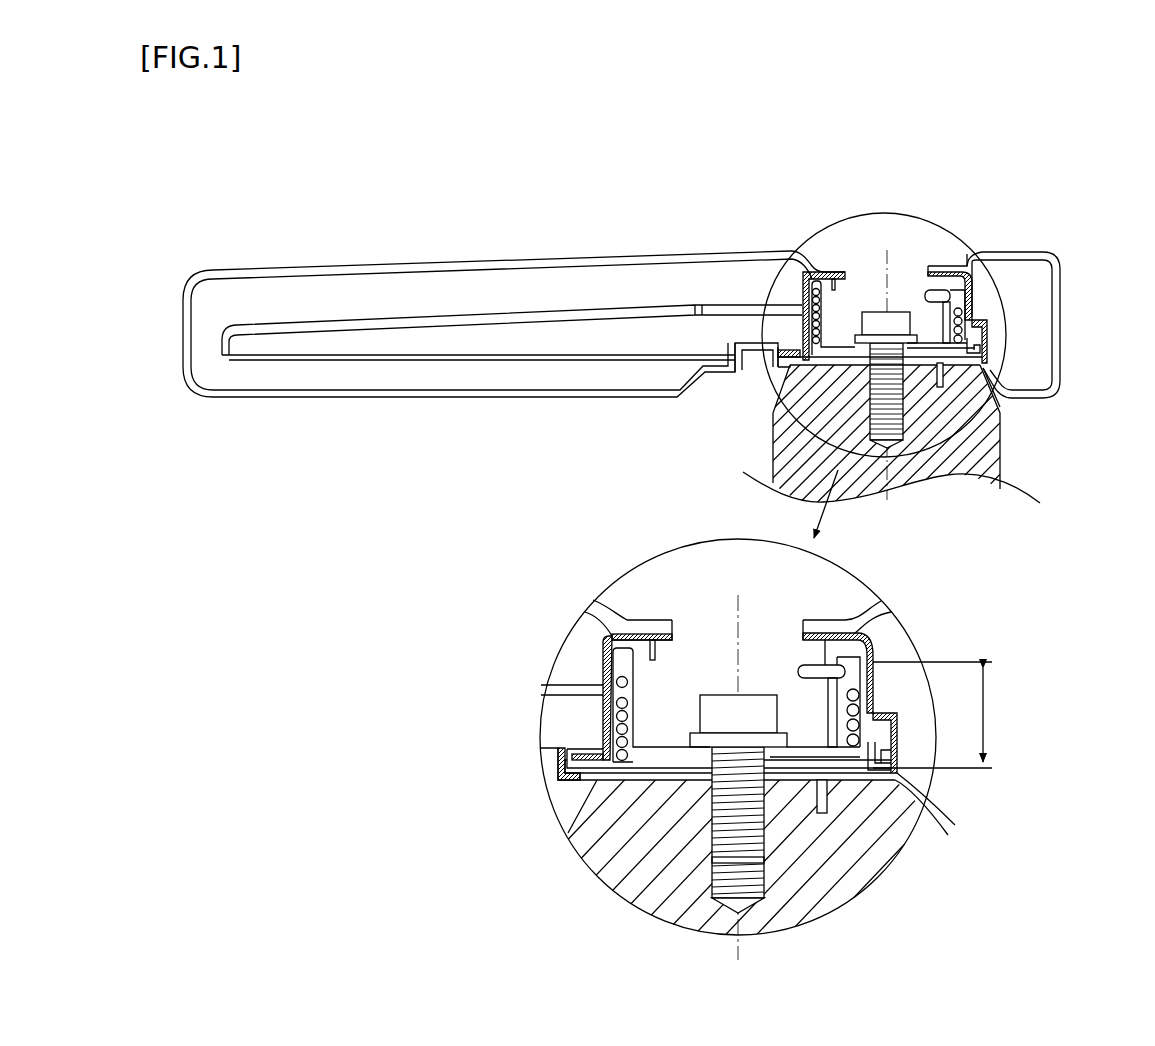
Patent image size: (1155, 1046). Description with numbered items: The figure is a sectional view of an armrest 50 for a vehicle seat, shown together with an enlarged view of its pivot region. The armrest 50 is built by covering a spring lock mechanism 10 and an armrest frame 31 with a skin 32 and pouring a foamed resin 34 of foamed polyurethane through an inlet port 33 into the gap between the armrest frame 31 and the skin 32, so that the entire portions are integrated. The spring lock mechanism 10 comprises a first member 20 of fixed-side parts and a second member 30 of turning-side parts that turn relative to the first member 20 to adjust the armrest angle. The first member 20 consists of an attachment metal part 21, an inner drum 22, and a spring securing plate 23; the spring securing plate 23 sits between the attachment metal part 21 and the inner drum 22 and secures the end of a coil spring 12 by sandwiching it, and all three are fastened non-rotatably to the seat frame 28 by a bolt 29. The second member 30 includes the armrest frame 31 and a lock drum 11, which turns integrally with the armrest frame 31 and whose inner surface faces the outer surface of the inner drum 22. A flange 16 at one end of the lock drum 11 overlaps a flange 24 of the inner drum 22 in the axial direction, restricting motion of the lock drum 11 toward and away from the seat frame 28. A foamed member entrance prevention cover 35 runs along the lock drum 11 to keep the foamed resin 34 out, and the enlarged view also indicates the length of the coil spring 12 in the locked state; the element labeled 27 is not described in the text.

The spring lock mechanism 10 is at (853, 240).
The lock drum 11 is at (829, 316).
The coil spring 12 is at (957, 308).
The flange 16 is at (941, 319).
The first member 20 is at (968, 385).
The attachment metal part 21 is at (880, 357).
The inner drum 22 is at (655, 681).
The spring securing plate 23 is at (600, 732).
The flange 24 is at (568, 652).
The fixing portion 27 is at (870, 790).
The seat frame 28 is at (987, 450).
The bolt 29 is at (897, 312).
The second member 30 is at (625, 292).
The armrest frame 31 is at (313, 355).
The skin 32 is at (453, 263).
The inlet port 33 is at (747, 350).
The foamed resin 34 is at (343, 293).
The foamed member entrance prevention cover 35 is at (898, 745).
The armrest 50 is at (976, 218).